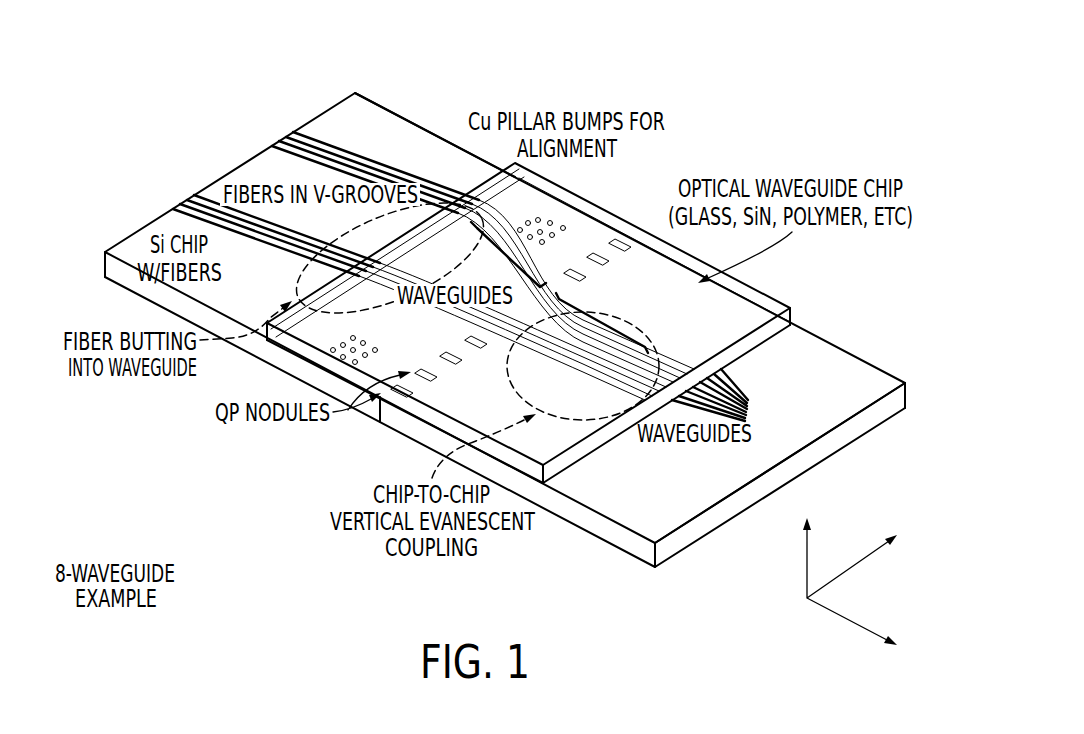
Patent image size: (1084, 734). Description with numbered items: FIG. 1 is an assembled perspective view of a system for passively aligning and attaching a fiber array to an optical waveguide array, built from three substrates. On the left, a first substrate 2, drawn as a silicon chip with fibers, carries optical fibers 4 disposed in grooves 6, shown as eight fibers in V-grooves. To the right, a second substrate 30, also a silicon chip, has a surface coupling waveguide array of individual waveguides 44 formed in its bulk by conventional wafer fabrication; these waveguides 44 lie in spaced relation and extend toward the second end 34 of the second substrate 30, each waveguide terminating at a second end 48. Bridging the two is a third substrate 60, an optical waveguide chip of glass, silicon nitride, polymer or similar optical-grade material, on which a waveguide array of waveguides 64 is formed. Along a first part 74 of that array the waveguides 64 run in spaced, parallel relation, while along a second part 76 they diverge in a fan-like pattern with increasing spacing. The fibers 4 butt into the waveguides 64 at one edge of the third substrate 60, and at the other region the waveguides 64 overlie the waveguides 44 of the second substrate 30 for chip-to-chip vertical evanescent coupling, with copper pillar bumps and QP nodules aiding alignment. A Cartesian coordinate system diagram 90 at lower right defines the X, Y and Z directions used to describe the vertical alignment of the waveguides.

The first substrate 2 is at (420, 118).
The optical fibers 4 is at (296, 146).
The grooves 6 is at (308, 150).
The second substrate 30 is at (882, 362).
The second end 34 is at (674, 556).
The waveguides 44 is at (718, 398).
The second end 48 is at (704, 457).
The third substrate 60 is at (642, 218).
The waveguides 64 is at (492, 345).
The first part 74 is at (605, 323).
The second part 76 is at (510, 254).
The Cartesian coordinate system diagram 90 is at (883, 605).